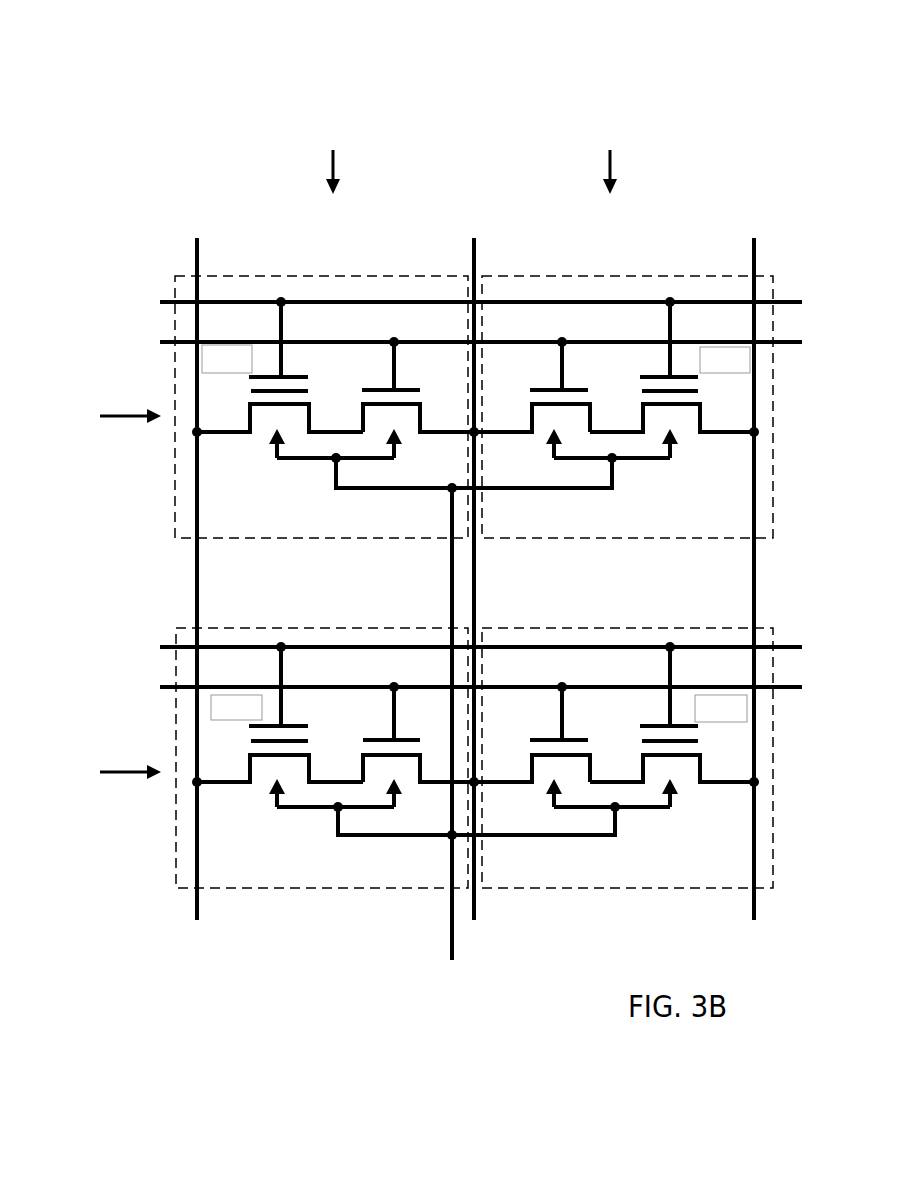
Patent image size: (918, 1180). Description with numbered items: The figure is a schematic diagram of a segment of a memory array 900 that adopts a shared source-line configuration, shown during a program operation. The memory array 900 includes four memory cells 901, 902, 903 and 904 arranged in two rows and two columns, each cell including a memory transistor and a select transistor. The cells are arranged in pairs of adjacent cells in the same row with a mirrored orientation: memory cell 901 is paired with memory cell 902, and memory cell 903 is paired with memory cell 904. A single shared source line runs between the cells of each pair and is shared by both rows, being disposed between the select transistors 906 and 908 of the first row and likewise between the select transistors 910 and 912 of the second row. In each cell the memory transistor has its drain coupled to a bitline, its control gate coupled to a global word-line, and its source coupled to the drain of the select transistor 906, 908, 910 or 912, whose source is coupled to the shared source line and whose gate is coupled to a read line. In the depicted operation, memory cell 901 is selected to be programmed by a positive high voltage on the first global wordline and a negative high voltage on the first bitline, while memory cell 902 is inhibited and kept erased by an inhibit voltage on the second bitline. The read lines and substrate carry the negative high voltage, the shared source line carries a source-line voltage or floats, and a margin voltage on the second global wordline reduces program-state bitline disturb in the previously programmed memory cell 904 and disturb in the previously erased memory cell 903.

The memory array 900 is at (602, 68).
The memory cell 901 is at (327, 407).
The memory cell 902 is at (612, 407).
The memory cell 903 is at (327, 758).
The memory cell 904 is at (612, 758).
The select transistor 906 is at (376, 388).
The select transistor 908 is at (548, 388).
The select transistor 910 is at (382, 739).
The select transistor 912 is at (549, 738).